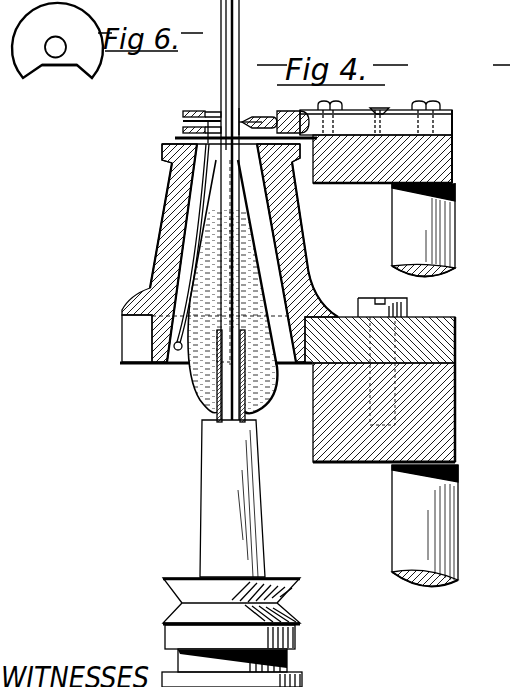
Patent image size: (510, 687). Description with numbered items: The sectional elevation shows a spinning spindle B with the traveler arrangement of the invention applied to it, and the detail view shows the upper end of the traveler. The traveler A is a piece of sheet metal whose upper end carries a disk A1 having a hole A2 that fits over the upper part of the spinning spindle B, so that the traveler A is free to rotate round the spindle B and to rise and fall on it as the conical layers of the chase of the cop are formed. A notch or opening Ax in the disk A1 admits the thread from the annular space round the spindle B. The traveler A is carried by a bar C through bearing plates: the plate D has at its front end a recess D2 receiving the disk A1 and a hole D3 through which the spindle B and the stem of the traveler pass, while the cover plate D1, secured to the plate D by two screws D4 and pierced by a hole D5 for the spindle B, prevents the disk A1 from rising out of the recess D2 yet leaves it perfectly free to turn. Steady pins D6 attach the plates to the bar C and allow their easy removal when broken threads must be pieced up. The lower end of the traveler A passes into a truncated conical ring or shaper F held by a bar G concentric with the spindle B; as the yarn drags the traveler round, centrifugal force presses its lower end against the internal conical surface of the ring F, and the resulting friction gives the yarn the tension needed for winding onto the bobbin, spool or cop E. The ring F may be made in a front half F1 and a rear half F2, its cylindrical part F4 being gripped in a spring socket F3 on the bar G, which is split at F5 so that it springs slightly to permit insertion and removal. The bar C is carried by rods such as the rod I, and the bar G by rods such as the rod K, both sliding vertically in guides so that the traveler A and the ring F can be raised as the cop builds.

In FIG. 6, the disk A1 is at (57, 40).
In FIG. 4, the disk A1 is at (292, 115).
In FIG. 6, the hole A2 is at (66, 47).
In FIG. 4, the hole A2 is at (242, 116).
In FIG. 6, the notch or opening Ax is at (59, 75).
In FIG. 4, the traveler A is at (191, 247).
In FIG. 4, the spinning spindle B is at (239, 12).
In FIG. 4, the bar C is at (453, 145).
In FIG. 4, the plate D is at (290, 138).
In FIG. 4, the cover plate D1 is at (296, 110).
In FIG. 4, the recess D2 is at (183, 129).
In FIG. 4, the hole D3 is at (253, 120).
In FIG. 4, the screws D4 is at (438, 101).
In FIG. 4, the hole D5 is at (197, 112).
In FIG. 4, the steady pins D6 is at (383, 108).
In FIG. 4, the bobbin, spool or cop E is at (249, 268).
In FIG. 4, the truncated conical ring or shaper F is at (264, 190).
In FIG. 4, the front half of conical ring F1 is at (168, 212).
In FIG. 4, the rear half of conical ring F2 is at (296, 220).
In FIG. 4, the spring socket F3 is at (455, 340).
In FIG. 4, the cylindrical part of conical ring F4 is at (232, 352).
In FIG. 4, the split F5 is at (155, 350).
In FIG. 4, the bar G is at (455, 400).
In FIG. 4, the rod I is at (423, 230).
In FIG. 4, the rod K is at (425, 525).